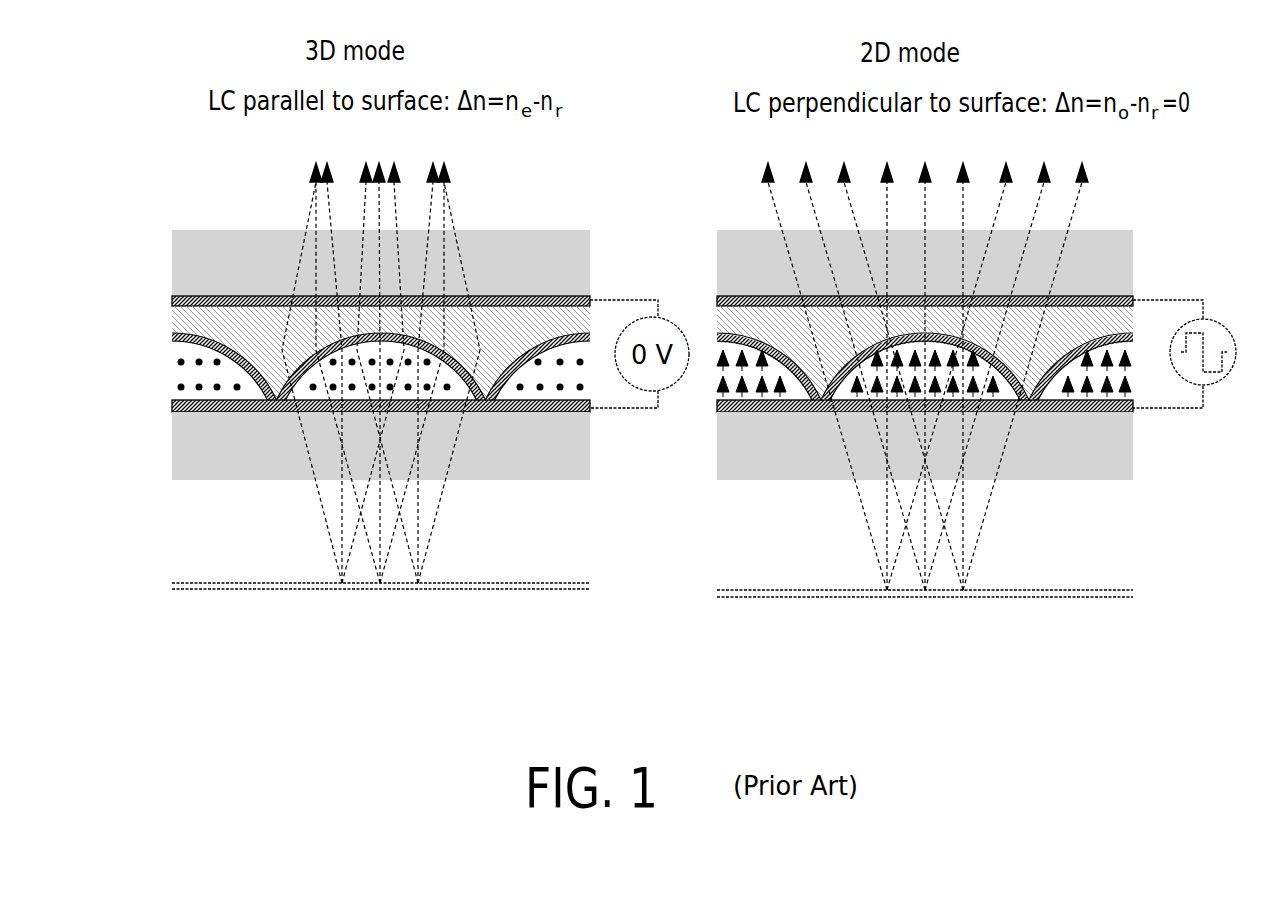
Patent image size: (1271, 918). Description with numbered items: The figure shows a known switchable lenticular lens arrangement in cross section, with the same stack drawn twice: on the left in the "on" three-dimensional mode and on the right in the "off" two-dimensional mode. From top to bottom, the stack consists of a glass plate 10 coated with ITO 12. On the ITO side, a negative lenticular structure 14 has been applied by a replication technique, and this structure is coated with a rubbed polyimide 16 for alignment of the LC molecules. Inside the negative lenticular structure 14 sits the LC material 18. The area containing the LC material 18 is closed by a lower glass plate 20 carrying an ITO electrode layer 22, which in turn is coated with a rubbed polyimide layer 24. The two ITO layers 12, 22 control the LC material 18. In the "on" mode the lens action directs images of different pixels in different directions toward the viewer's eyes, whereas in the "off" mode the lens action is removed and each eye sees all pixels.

The glass plate 10 is at (162, 226).
The ITO 12 is at (168, 282).
The negative lenticular structure 14 is at (167, 299).
The polyimide 16 is at (160, 331).
The LC material 18 is at (158, 361).
The rubbed polyimide layer 24 is at (163, 400).
The ITO electrode layer 22 is at (166, 422).
The lower glass plate 20 is at (182, 460).